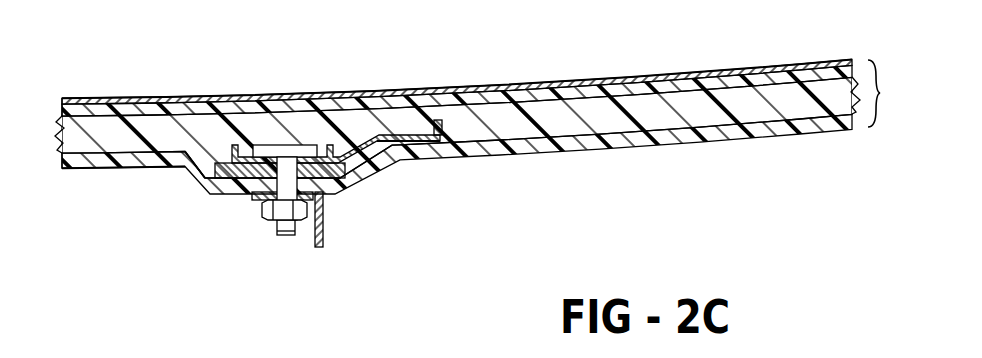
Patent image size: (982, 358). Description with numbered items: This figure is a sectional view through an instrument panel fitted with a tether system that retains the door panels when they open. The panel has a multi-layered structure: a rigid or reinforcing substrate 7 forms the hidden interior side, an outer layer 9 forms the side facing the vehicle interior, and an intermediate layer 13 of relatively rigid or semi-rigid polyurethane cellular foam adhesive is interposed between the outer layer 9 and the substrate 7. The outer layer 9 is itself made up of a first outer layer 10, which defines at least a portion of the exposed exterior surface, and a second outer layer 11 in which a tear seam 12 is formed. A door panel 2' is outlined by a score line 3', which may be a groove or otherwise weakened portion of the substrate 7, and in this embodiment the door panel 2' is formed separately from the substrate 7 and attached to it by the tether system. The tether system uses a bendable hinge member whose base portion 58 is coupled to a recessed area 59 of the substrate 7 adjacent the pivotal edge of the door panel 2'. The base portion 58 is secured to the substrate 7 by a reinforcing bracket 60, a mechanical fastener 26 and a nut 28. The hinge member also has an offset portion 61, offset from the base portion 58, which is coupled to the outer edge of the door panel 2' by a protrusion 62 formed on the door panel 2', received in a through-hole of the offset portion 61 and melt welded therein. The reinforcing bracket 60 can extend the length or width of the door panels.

The first outer layer 10 is at (62, 100).
The second outer layer 11 is at (62, 108).
The tear seam 12 is at (687, 78).
The intermediate layer 13 is at (88, 170).
The substrate 7 is at (120, 170).
The outer layer 9 is at (882, 93).
The door panel 2' is at (457, 145).
The score line 3' is at (457, 146).
The mechanical fastener 26 is at (290, 145).
The nut 28 is at (263, 217).
The base portion 58 is at (225, 178).
The recessed area 59 is at (213, 150).
The reinforcing bracket 60 is at (340, 183).
The offset portion 61 is at (407, 153).
The protrusion 62 is at (407, 133).